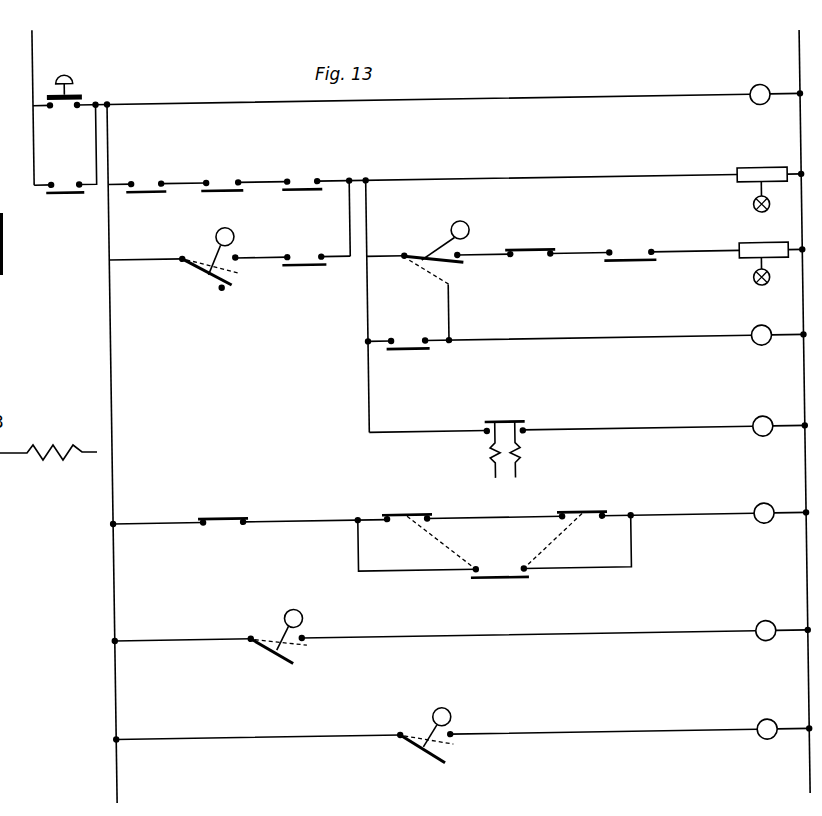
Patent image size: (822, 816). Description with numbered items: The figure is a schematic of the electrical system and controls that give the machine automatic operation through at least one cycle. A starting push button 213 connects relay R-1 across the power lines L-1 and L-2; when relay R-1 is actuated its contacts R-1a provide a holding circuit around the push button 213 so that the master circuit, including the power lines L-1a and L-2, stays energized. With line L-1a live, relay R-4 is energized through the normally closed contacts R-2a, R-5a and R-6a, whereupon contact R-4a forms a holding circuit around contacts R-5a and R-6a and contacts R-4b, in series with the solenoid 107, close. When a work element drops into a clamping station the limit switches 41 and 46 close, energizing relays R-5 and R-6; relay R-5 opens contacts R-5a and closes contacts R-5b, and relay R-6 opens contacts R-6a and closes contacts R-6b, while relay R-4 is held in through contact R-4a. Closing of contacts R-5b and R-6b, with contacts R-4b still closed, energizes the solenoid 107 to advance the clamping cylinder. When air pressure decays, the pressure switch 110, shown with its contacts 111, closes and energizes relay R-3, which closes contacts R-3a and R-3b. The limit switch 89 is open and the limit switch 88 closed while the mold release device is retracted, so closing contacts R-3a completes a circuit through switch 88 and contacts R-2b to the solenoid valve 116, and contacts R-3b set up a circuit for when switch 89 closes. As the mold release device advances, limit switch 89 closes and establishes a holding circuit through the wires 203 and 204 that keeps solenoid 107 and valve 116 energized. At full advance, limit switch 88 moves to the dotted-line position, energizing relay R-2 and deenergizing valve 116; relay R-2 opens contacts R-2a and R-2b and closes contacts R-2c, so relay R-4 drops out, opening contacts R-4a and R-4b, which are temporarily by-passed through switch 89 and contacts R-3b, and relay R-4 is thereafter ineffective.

The starting push button 213 is at (67, 77).
The wire 203 is at (493, 187).
The wire 204 is at (366, 230).
The limit switch 88 is at (441, 272).
The limit switch 89 is at (208, 280).
The solenoid 107 is at (770, 164).
The solenoid valve 116 is at (766, 239).
The pressure switch 110 is at (516, 411).
The contacts 111 is at (481, 439).
The limit switch 46 is at (271, 663).
The limit switch 41 is at (406, 755).
The power line L-1 is at (34, 57).
The power line L-2 is at (799, 48).
The power line L-1a is at (107, 364).
The relay R-1 is at (770, 108).
The relay R-2 is at (768, 348).
The relay R-3 is at (768, 440).
The relay R-4 is at (768, 526).
The relay R-5 is at (768, 644).
The relay R-6 is at (768, 742).
The contacts R-1a is at (81, 197).
The contacts R-2a is at (200, 532).
The contacts R-2b is at (506, 269).
The contacts R-2c is at (385, 365).
The contacts R-3a is at (606, 274).
The contacts R-3b is at (276, 282).
The contact R-4a is at (522, 606).
The contacts R-4b is at (281, 197).
The contacts R-5a is at (380, 532).
The contacts R-5b is at (127, 196).
The contacts R-6a is at (592, 532).
The contacts R-6b is at (197, 196).